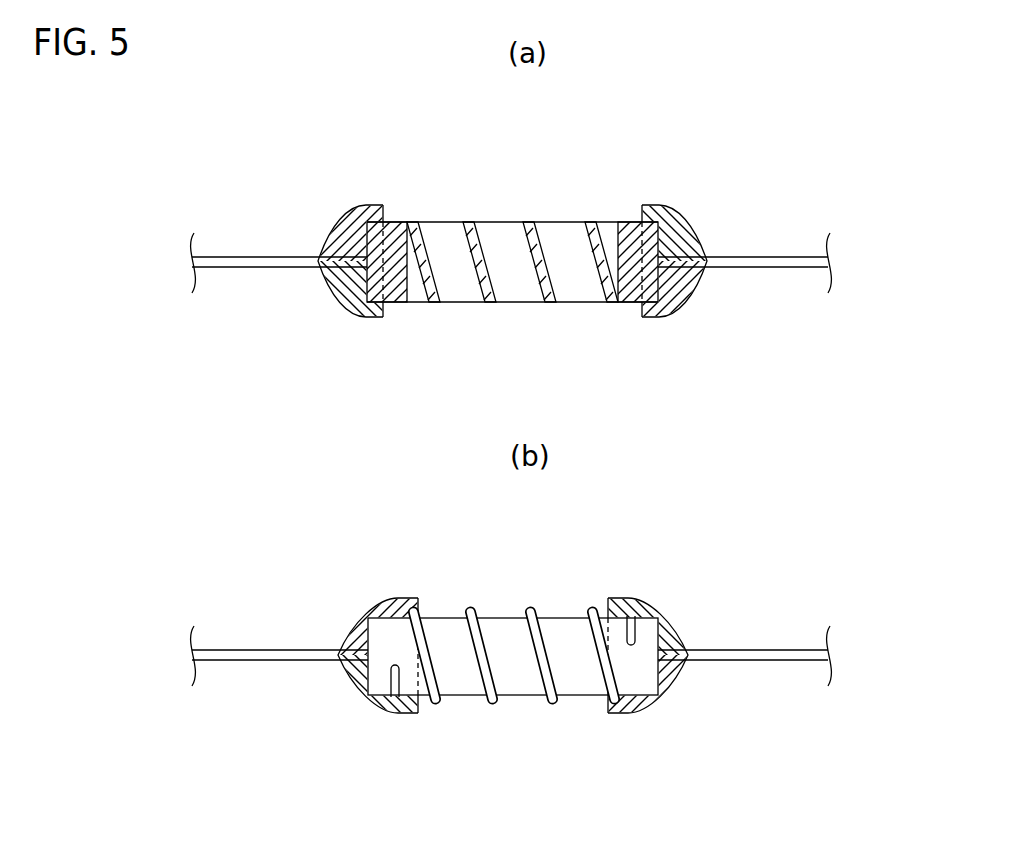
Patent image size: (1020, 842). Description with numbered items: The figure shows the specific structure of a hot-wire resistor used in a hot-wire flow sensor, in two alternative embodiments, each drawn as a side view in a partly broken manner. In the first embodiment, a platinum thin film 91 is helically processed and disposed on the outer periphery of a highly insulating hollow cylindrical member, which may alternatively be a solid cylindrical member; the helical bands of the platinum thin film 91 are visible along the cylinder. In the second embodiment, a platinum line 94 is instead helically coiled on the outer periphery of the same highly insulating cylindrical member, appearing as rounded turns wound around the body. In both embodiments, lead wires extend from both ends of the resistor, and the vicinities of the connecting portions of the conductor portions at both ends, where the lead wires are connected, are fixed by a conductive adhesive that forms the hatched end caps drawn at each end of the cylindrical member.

The platinum thin film 91 is at (622, 302).
The platinum line 94 is at (537, 613).